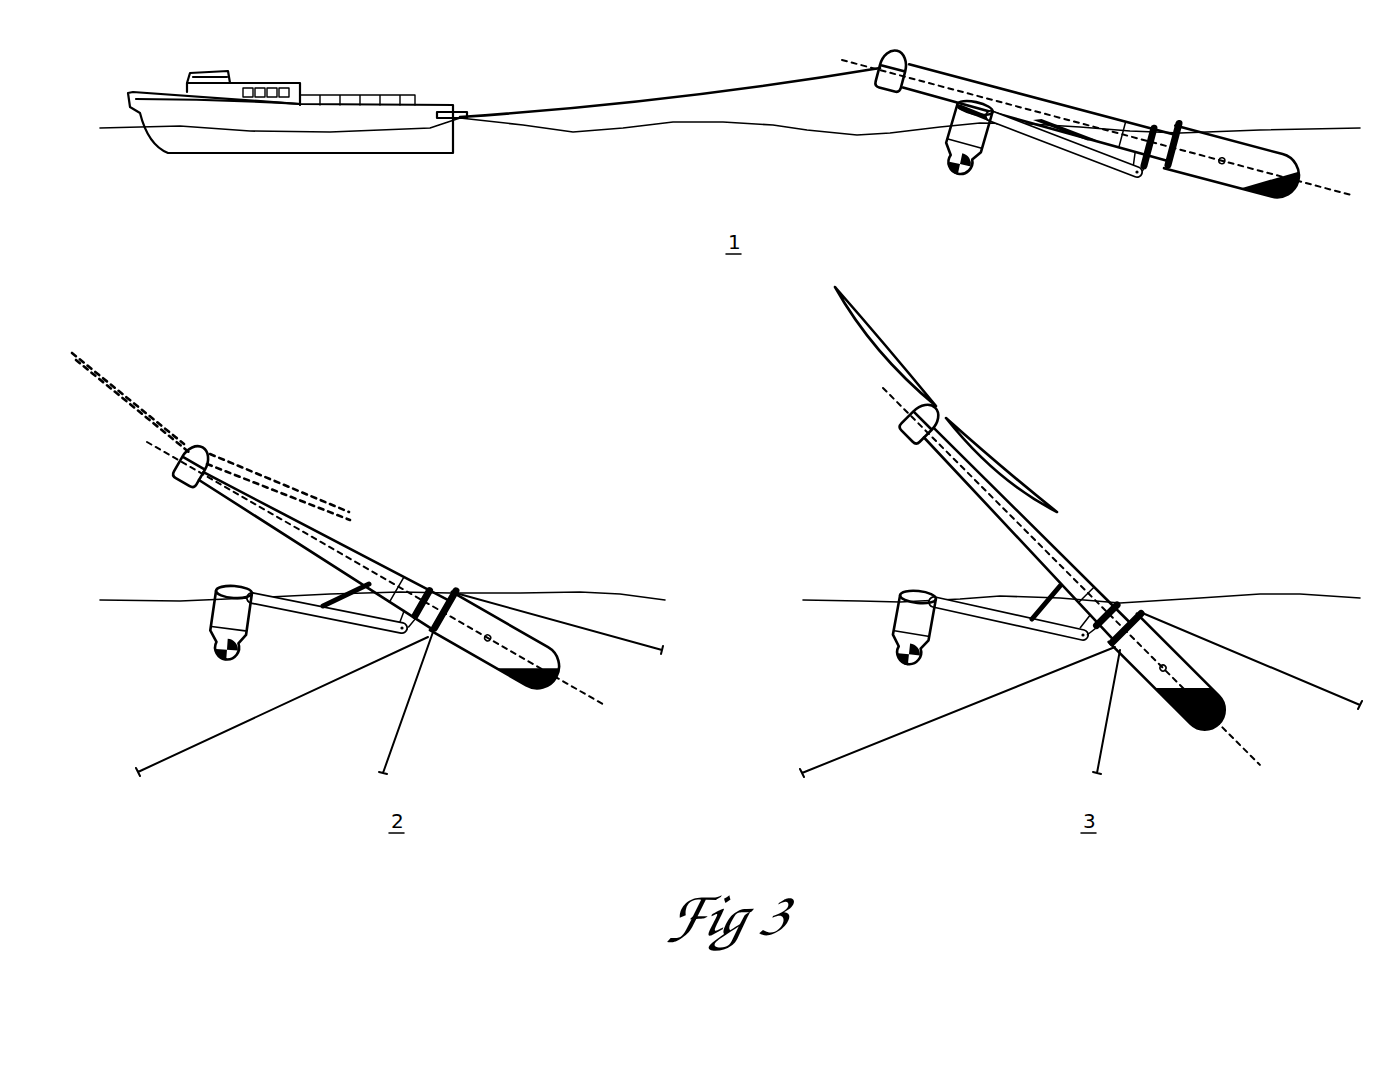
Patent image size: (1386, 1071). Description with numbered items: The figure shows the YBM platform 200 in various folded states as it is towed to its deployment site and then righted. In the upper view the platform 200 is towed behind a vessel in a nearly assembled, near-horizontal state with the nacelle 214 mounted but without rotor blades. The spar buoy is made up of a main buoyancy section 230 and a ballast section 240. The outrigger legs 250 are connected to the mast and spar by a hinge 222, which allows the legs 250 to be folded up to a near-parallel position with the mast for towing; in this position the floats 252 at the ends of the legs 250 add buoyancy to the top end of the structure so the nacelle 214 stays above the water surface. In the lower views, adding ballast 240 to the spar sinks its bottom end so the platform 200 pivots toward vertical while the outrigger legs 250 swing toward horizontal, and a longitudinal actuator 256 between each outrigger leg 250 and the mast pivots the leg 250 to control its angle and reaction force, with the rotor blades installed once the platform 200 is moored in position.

The YBM platform 200 is at (1089, 130).
The nacelle 214 is at (891, 70).
The hinge 222 is at (413, 636).
The main buoyancy section 230 is at (1101, 131).
The ballast section 240 is at (1275, 197).
The outrigger leg 250 is at (1043, 147).
The float 252 is at (940, 142).
The longitudinal actuator 256 is at (352, 592).